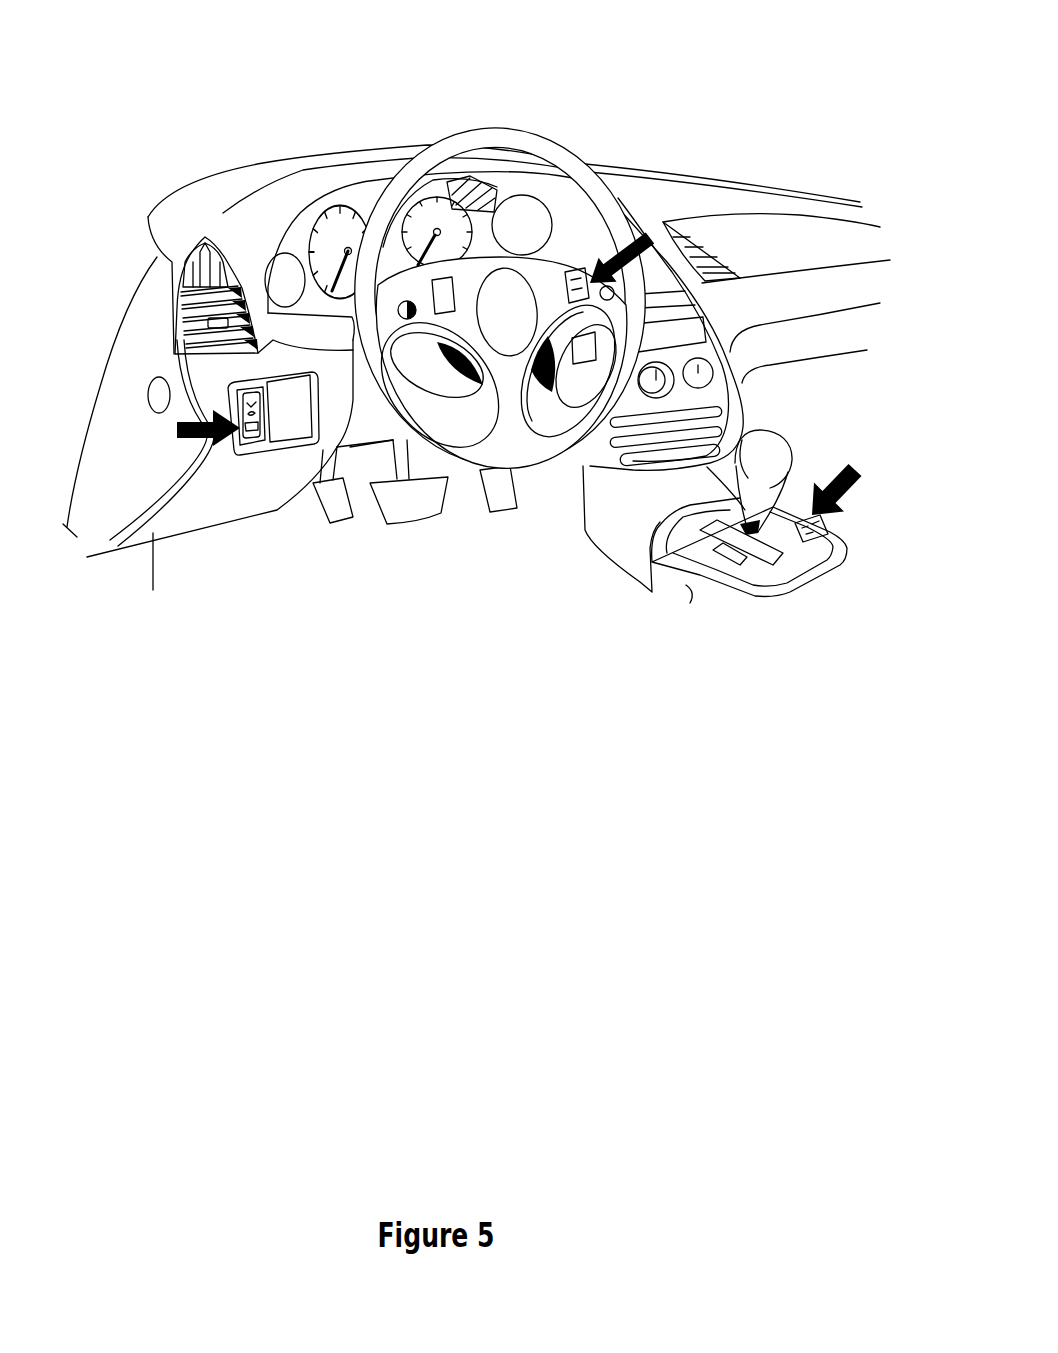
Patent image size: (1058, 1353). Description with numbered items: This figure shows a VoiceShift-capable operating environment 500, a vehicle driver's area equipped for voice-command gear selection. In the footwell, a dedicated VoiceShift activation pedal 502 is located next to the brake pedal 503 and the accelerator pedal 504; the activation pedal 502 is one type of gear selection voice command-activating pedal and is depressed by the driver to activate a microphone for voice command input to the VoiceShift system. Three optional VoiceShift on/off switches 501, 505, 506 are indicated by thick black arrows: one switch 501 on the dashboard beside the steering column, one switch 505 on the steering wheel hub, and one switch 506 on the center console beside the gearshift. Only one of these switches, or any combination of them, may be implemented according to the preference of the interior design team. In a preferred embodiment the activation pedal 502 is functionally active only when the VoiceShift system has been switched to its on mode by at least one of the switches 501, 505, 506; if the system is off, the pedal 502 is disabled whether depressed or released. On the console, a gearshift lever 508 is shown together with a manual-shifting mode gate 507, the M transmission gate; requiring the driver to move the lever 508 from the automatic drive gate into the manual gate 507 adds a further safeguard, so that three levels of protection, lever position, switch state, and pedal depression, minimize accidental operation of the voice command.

The VoiceShift-capable operating environment 500 is at (412, 1141).
The VoiceShift on/off switch 501 is at (183, 437).
The dedicated VoiceShift activation pedal 502 is at (337, 493).
The brake pedal 503 is at (411, 490).
The accelerator pedal 504 is at (498, 492).
The VoiceShift on/off switch 505 is at (642, 235).
The VoiceShift on/off switch 506 is at (858, 466).
The manual-shifting mode gate 507 is at (727, 557).
The gearshift lever 508 is at (763, 457).